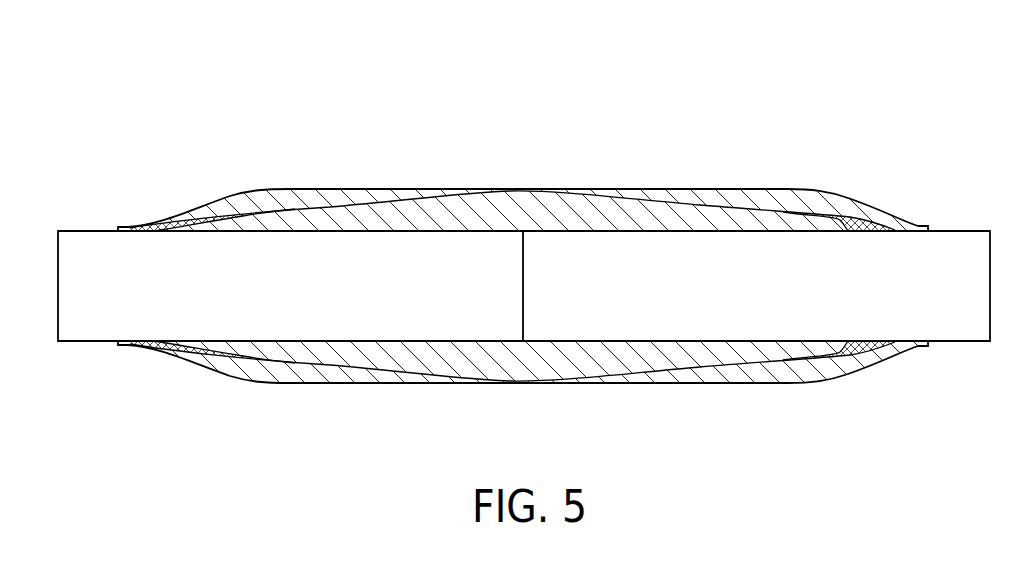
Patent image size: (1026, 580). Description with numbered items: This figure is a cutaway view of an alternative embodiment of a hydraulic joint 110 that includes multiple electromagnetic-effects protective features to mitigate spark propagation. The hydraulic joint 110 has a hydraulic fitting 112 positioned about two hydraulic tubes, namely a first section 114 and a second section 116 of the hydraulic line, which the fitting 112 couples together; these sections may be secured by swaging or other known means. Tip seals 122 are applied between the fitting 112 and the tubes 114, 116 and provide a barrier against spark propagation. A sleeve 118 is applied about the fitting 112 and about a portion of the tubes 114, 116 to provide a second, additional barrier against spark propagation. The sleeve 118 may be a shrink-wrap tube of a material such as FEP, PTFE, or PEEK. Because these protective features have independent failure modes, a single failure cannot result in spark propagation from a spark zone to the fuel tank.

The hydraulic joint 110 is at (538, 209).
The hydraulic fitting 112 is at (674, 345).
The first section of hydraulic line 114 is at (94, 241).
The second section of hydraulic line 116 is at (949, 237).
The sleeve 118 is at (340, 191).
The tip seals 122 is at (187, 231).